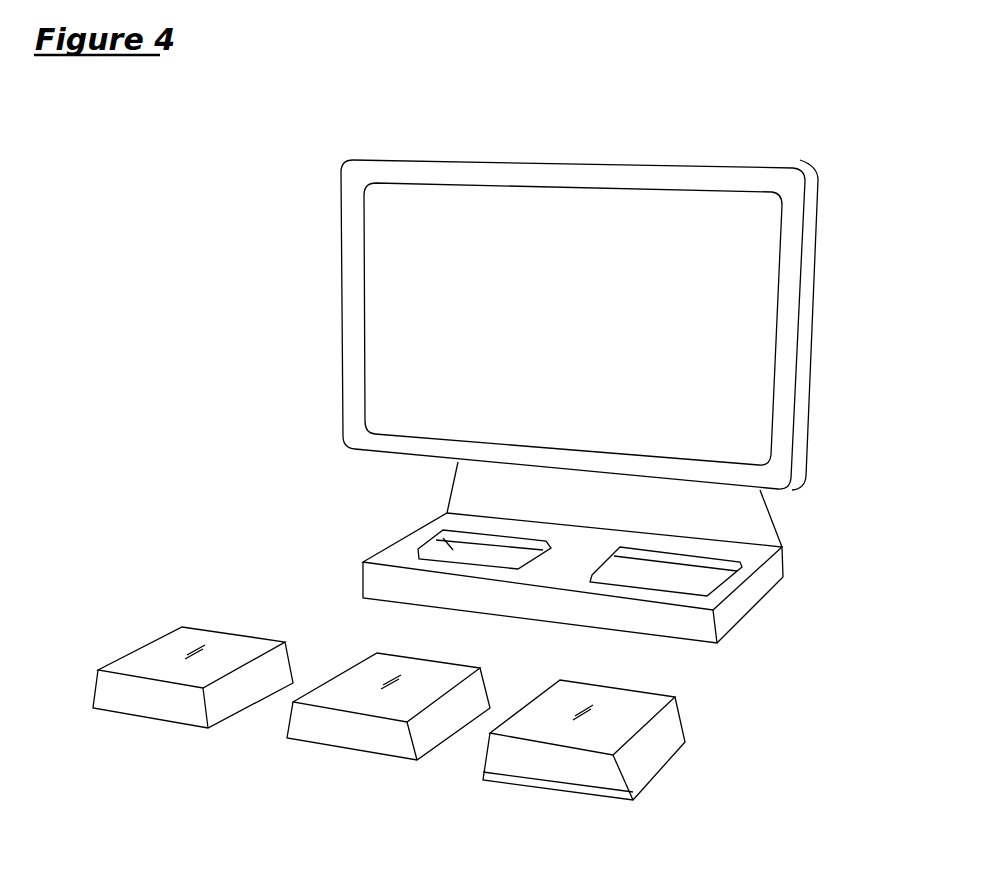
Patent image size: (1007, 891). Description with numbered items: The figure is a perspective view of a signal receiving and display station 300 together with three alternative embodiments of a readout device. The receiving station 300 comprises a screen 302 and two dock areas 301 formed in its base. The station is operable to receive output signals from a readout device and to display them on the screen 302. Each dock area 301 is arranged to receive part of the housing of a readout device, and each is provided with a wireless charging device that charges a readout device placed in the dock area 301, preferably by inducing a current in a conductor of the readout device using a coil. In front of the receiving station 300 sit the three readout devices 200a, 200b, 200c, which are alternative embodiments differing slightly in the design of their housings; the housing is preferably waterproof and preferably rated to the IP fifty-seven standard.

The signal receiving and display station 300 is at (723, 212).
The dock area 301 is at (420, 528).
The screen 302 is at (810, 333).
The readout device 200a is at (152, 705).
The readout device 200b is at (352, 732).
The readout device 200c is at (552, 765).